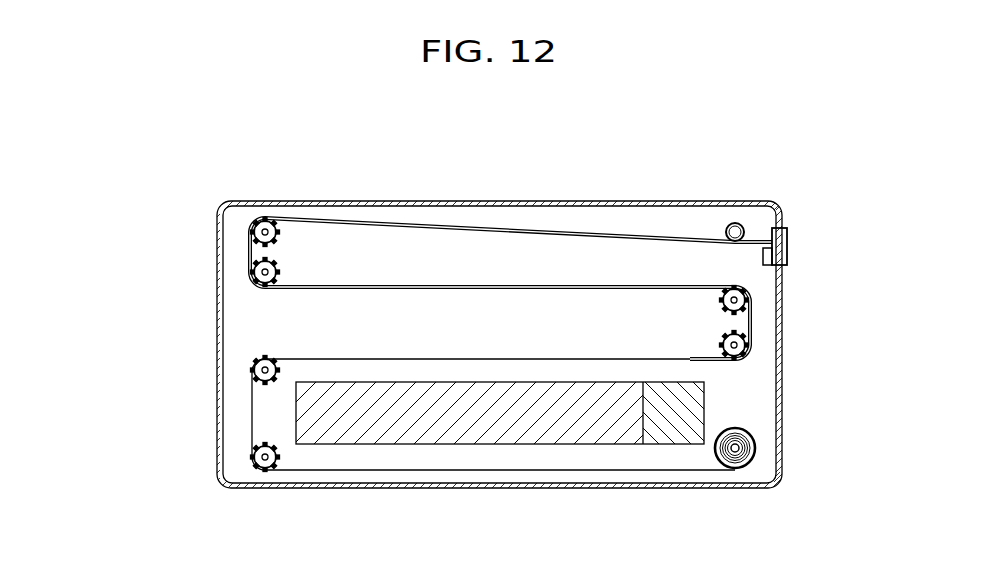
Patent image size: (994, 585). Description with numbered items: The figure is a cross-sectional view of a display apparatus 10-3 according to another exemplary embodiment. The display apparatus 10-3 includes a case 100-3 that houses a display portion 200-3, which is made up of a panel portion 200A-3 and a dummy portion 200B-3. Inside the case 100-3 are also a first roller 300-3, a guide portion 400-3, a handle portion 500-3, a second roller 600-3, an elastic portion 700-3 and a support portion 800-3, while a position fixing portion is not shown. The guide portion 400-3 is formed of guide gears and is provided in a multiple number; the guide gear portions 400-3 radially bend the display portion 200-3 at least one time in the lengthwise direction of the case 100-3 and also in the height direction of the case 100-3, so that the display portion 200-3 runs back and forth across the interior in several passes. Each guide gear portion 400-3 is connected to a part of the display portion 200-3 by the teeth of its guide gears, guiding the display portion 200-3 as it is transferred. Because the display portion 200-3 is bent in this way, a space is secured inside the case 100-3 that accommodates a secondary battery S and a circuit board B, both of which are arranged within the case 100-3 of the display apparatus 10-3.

The display apparatus 10-3 is at (523, 140).
The case 100-3 is at (623, 203).
The display portion 200-3 is at (400, 315).
The panel portion 200A-3 is at (250, 258).
The dummy portion 200B-3 is at (252, 412).
The first roller 300-3 is at (763, 448).
The guide portion 400-3 is at (258, 470).
The handle portion 500-3 is at (787, 245).
The second roller 600-3 is at (747, 219).
The elastic portion 700-3 is at (737, 453).
The support portion 800-3 is at (779, 288).
The secondary battery S is at (466, 436).
The circuit board B is at (672, 437).